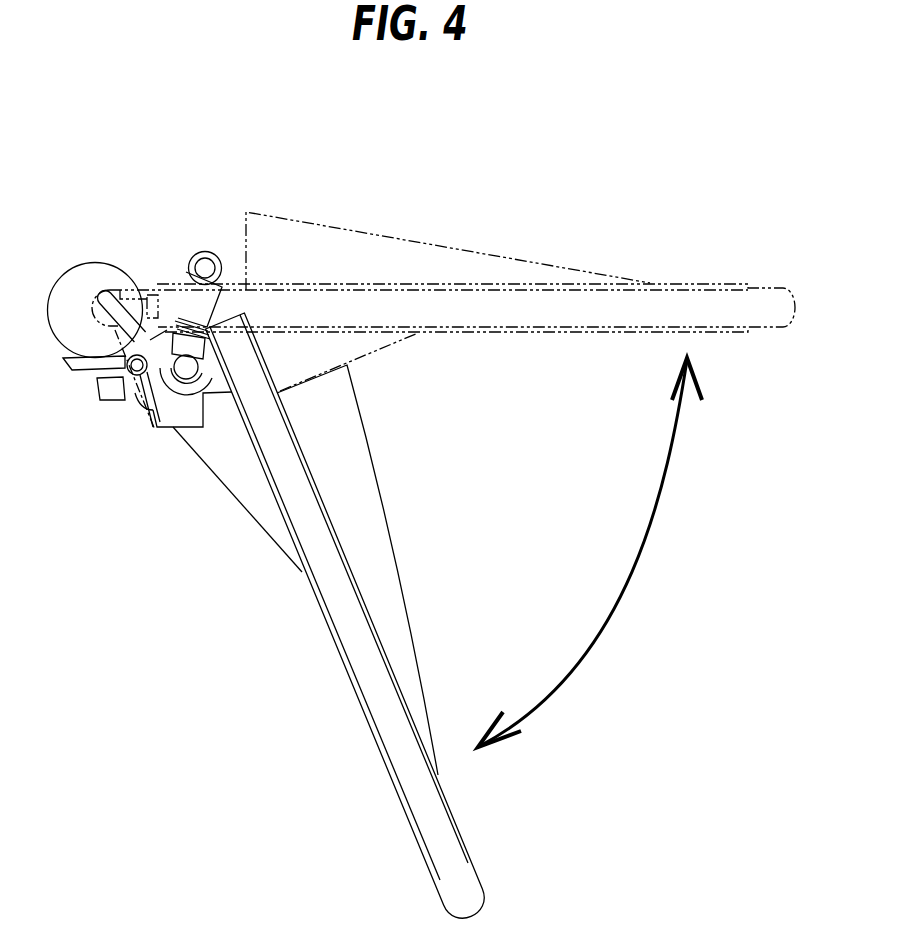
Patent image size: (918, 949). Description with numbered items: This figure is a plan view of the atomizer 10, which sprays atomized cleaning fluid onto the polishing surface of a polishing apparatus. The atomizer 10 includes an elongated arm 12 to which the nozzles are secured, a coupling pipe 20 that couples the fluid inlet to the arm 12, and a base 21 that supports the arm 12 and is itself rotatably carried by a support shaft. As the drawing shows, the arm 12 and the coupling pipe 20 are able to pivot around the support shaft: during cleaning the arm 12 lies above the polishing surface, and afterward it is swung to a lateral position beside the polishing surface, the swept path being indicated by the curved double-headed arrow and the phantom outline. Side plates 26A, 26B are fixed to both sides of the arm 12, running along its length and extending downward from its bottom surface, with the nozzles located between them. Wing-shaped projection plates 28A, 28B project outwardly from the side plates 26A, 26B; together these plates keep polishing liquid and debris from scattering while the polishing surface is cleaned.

The atomizer 10 is at (437, 222).
The arm 12 is at (343, 748).
The coupling pipe 20 is at (200, 262).
The base 21 is at (148, 472).
The side plate 26A is at (335, 643).
The side plate 26B is at (432, 617).
The projection plate 28A is at (195, 545).
The projection plate 28B is at (445, 517).